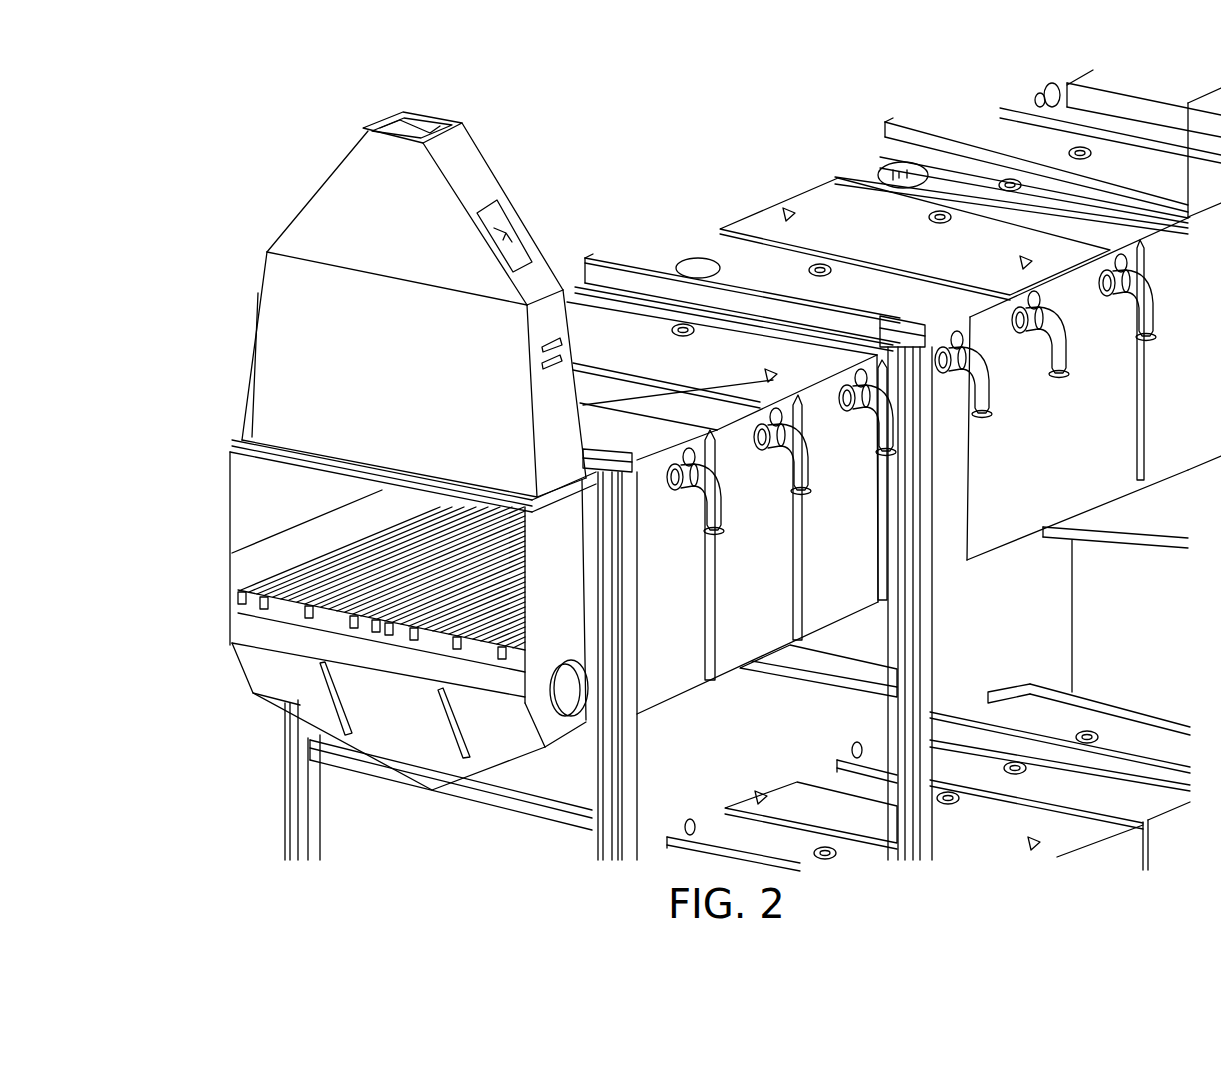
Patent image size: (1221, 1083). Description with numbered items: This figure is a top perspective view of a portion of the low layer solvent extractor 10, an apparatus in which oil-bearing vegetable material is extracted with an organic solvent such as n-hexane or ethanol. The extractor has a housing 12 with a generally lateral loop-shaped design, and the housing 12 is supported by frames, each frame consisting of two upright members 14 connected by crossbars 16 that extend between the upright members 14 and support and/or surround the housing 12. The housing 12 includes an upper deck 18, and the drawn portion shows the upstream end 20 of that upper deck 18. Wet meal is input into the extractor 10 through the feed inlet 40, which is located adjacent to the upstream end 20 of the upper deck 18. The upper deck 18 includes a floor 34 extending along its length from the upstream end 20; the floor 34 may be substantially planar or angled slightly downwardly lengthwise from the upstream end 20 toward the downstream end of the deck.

The low layer solvent extractor 10 is at (614, 100).
The housing 12 is at (875, 200).
The upright members 14 is at (927, 649).
The crossbars 16 is at (810, 670).
The upper deck 18 is at (820, 197).
The upstream end 20 is at (316, 638).
The floor 34 is at (316, 598).
The feed inlet 40 is at (326, 186).